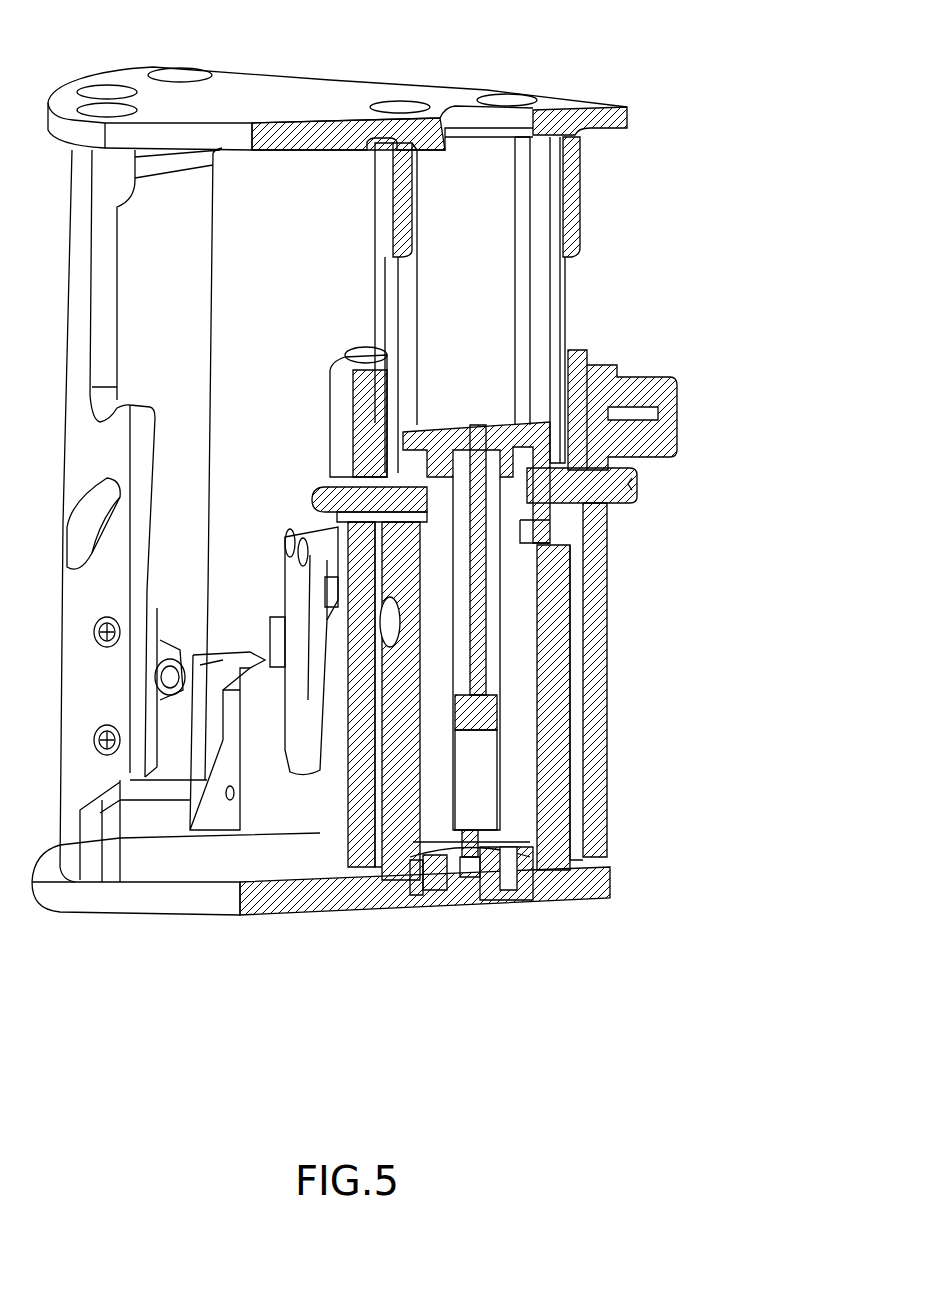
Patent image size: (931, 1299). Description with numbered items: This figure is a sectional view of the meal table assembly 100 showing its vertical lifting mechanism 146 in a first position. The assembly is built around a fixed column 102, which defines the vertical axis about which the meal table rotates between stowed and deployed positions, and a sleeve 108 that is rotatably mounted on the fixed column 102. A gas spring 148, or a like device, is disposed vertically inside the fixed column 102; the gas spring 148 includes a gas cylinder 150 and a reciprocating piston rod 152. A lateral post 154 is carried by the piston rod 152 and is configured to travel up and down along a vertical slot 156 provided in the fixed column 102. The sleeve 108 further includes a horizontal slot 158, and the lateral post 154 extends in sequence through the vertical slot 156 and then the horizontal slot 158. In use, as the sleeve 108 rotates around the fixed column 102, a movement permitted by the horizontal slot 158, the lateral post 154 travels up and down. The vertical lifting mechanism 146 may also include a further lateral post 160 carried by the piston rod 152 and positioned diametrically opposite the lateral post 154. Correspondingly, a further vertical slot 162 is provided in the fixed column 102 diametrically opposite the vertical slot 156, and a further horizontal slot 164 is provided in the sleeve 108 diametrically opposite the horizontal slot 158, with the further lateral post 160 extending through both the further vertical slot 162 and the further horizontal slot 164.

The meal table assembly 100 is at (533, 31).
The fixed column 102 is at (556, 830).
The sleeve 108 is at (588, 793).
The vertical lifting mechanism 146 is at (528, 398).
The gas spring 148 is at (497, 592).
The gas cylinder 150 is at (500, 752).
The piston rod 152 is at (478, 640).
The lateral post 154 is at (630, 483).
The vertical slot 156 is at (560, 298).
The horizontal slot 158 is at (614, 455).
The further lateral post 160 is at (322, 483).
The further vertical slot 162 is at (390, 300).
The further horizontal slot 164 is at (323, 470).